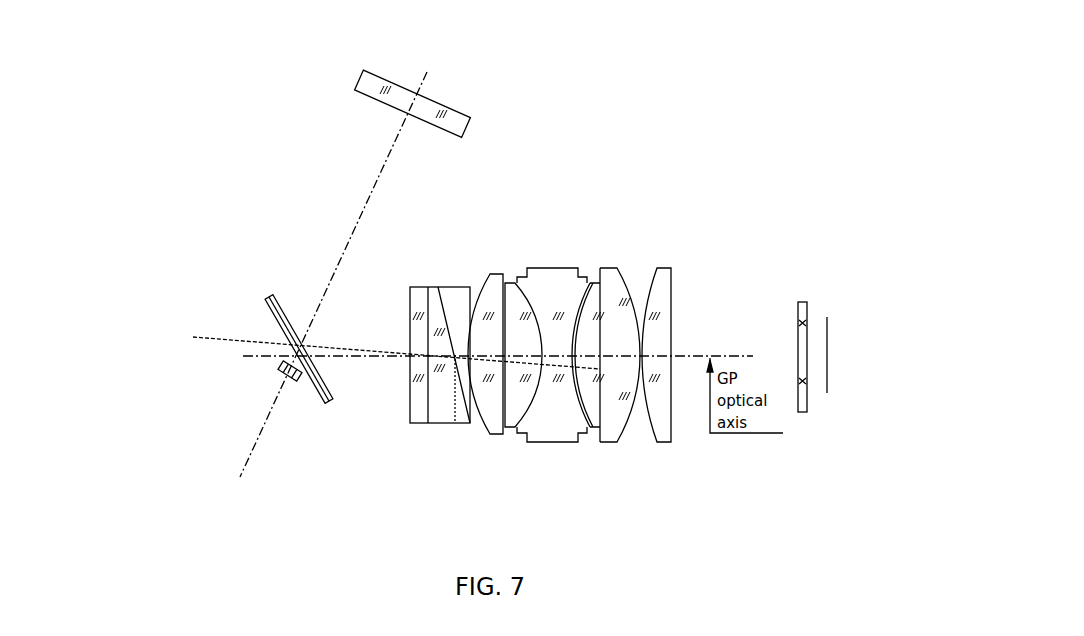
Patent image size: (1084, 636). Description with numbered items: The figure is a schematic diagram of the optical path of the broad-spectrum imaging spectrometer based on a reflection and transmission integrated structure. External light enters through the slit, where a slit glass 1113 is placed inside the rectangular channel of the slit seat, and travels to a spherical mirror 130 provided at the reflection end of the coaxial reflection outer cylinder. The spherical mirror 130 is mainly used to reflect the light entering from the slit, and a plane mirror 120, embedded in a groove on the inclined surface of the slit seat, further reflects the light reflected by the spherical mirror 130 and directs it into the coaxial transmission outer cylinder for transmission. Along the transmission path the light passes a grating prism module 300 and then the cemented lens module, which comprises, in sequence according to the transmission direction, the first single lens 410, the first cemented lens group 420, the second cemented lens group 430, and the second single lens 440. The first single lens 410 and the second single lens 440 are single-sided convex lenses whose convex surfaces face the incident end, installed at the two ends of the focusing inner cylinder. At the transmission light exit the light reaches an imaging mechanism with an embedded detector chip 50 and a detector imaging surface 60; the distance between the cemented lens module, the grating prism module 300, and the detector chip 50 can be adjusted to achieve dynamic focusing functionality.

The spherical mirror 130 is at (363, 70).
The plane mirror 120 is at (263, 295).
The slit glass 1113 is at (280, 372).
The grating prism module 300 is at (410, 423).
The first single lens 410 is at (498, 437).
The first cemented lens group 420 is at (527, 442).
The second cemented lens group 430 is at (600, 443).
The second single lens 440 is at (671, 443).
The detector chip 50 is at (805, 412).
The detector imaging surface 60 is at (827, 393).